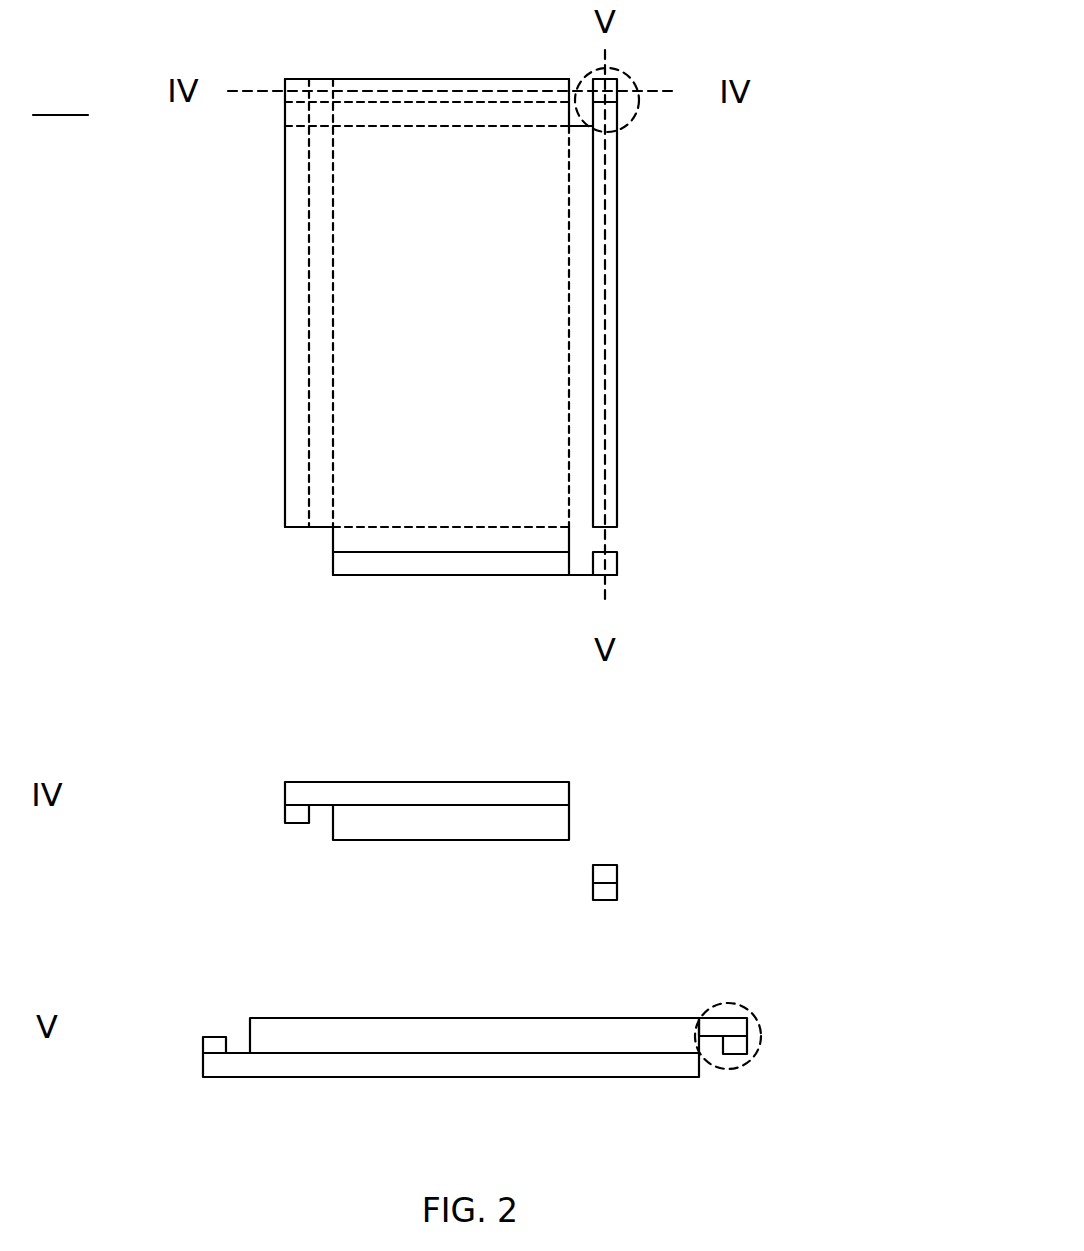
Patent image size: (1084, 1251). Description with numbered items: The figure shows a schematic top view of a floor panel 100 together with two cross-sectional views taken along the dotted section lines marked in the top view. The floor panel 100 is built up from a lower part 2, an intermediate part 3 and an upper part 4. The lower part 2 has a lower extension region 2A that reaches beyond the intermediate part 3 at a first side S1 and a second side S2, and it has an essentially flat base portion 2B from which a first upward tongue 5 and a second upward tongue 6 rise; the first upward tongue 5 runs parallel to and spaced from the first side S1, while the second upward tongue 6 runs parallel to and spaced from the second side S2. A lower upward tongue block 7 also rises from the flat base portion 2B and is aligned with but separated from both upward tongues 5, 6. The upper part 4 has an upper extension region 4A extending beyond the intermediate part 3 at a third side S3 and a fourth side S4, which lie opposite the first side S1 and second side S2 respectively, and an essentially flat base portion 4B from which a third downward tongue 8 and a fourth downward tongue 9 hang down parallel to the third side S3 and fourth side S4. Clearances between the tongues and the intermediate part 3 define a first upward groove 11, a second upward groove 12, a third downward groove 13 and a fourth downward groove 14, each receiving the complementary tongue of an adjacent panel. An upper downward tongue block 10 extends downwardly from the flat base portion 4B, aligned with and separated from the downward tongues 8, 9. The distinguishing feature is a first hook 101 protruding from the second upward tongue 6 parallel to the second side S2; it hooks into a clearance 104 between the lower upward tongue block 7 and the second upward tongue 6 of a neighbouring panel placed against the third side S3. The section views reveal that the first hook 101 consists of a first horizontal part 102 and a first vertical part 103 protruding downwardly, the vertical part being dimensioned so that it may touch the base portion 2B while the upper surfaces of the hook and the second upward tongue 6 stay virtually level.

The floor panel 100 is at (59, 98).
The lower part 2 is at (333, 543).
The lower extension region 2A is at (580, 544).
The flat base portion 2B is at (223, 1065).
The intermediate part 3 is at (494, 447).
The upper part 4 is at (572, 105).
The upper extension region 4A is at (318, 115).
The flat base portion 4B is at (297, 787).
The first upward tongue 5 is at (342, 573).
The second upward tongue 6 is at (608, 290).
The lower upward tongue block 7 is at (618, 558).
The third downward tongue 8 is at (556, 86).
The fourth downward tongue 9 is at (297, 235).
The upper downward tongue block 10 is at (283, 80).
The first upward groove 11 is at (452, 537).
The second upward groove 12 is at (580, 420).
The third downward groove 13 is at (500, 112).
The fourth downward groove 14 is at (320, 370).
The first hook 101 is at (637, 90).
The first horizontal part 102 is at (607, 876).
The first vertical part 103 is at (595, 893).
The clearance 104 is at (610, 541).
The first side S1 is at (380, 527).
The second side S2 is at (568, 298).
The third side S3 is at (447, 128).
The fourth side S4 is at (333, 238).